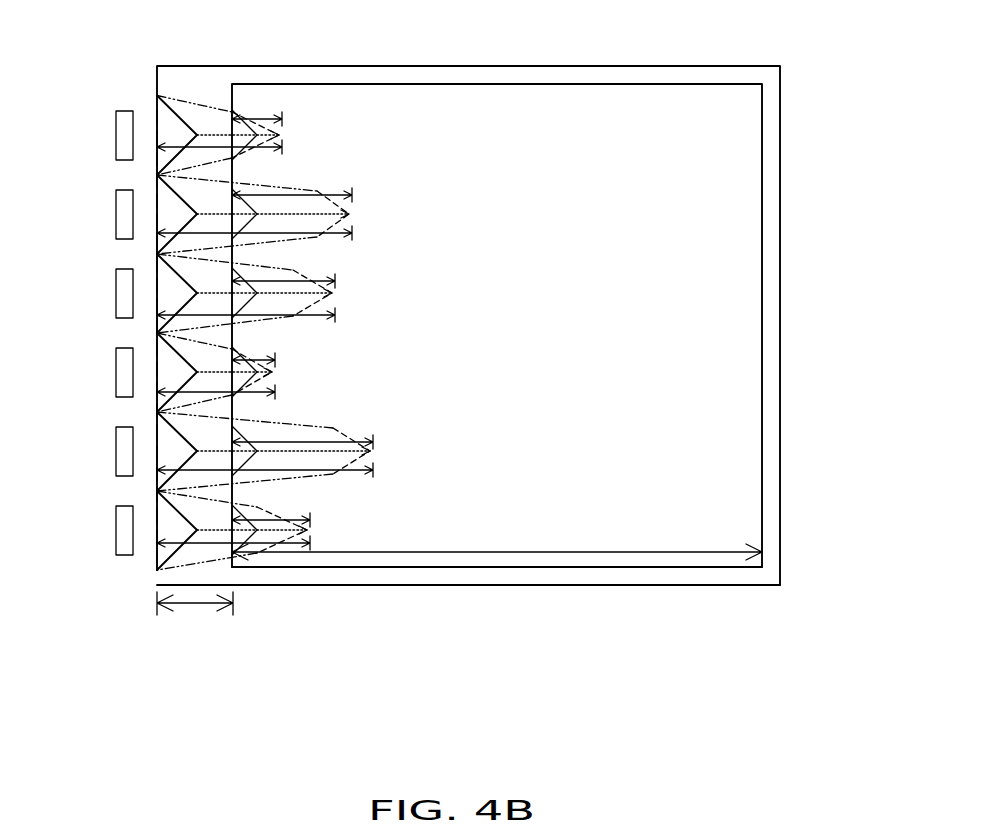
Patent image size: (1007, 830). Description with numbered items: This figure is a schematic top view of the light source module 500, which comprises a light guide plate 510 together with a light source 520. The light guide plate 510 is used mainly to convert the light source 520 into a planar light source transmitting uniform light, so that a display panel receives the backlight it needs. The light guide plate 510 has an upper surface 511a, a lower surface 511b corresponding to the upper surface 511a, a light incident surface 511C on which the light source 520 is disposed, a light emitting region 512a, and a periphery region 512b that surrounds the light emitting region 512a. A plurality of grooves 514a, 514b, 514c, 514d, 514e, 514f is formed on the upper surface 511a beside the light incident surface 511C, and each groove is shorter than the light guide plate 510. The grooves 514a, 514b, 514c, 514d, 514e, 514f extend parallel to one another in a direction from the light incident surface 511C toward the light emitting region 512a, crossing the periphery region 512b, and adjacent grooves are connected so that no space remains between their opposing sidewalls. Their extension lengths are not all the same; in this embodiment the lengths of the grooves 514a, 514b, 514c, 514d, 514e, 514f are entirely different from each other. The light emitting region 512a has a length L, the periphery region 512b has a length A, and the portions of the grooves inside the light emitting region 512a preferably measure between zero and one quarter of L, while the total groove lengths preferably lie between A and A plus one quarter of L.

The light source module 500 is at (704, 636).
The light guide plate 510 is at (768, 314).
The upper surface 511a is at (722, 574).
The lower surface 511b is at (602, 587).
The light incident surface 511C is at (155, 168).
The light emitting region 512a is at (447, 108).
The periphery region 512b is at (209, 88).
The groove 514a is at (212, 133).
The groove 514b is at (212, 228).
The groove 514c is at (212, 307).
The groove 514d is at (212, 386).
The groove 514e is at (212, 466).
The groove 514f is at (214, 516).
The light source 520 is at (122, 137).